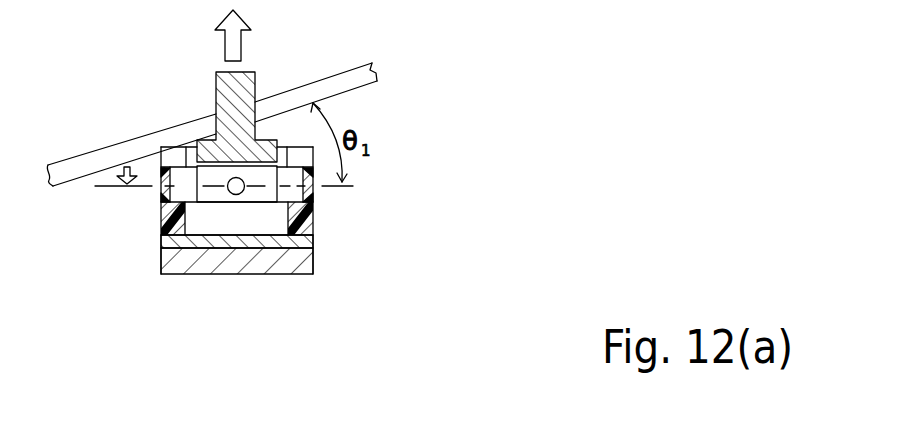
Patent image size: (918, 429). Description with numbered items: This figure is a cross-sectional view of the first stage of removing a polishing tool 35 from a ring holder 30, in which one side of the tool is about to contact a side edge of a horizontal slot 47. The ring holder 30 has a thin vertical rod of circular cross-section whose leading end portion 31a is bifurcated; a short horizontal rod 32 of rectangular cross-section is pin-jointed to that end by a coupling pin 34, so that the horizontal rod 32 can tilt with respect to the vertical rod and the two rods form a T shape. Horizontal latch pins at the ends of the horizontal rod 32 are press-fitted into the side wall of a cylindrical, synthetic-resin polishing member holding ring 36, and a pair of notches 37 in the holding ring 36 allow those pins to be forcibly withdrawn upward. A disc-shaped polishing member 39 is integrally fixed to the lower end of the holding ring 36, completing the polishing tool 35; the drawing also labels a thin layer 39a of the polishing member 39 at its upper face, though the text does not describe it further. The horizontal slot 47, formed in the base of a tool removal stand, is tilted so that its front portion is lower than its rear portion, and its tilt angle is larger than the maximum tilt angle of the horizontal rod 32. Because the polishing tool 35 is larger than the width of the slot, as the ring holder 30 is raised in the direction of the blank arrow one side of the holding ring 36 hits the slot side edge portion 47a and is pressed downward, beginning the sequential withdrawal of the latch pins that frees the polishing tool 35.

The ring holder 30 is at (213, 98).
The leading end portion of the vertical rod 31a is at (245, 202).
The horizontal rod 32 is at (160, 193).
The coupling pin 34 is at (234, 195).
The polishing tool 35 is at (322, 217).
The polishing member holding ring 36 is at (161, 222).
The notch 37 is at (313, 197).
The polishing member 39 is at (313, 263).
The base layer 39a is at (313, 238).
The horizontal slot 47 is at (78, 160).
The slot side edge portion 47a is at (347, 91).